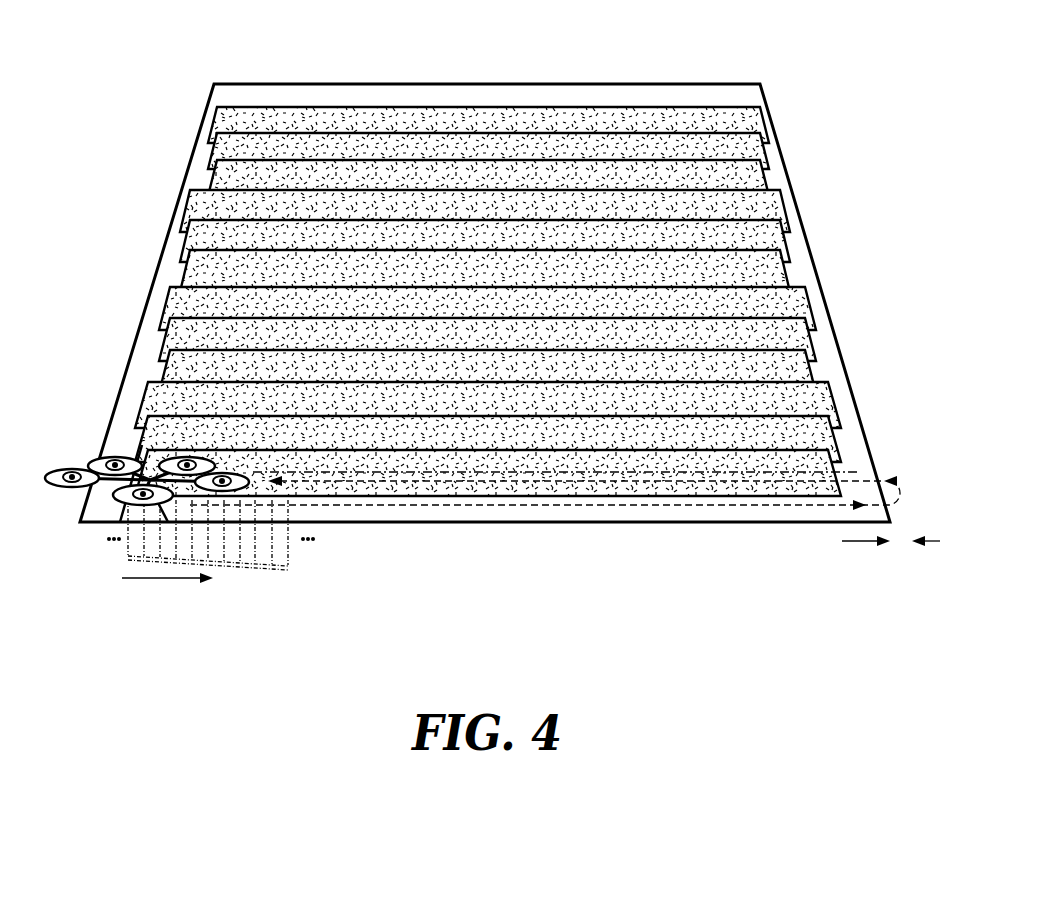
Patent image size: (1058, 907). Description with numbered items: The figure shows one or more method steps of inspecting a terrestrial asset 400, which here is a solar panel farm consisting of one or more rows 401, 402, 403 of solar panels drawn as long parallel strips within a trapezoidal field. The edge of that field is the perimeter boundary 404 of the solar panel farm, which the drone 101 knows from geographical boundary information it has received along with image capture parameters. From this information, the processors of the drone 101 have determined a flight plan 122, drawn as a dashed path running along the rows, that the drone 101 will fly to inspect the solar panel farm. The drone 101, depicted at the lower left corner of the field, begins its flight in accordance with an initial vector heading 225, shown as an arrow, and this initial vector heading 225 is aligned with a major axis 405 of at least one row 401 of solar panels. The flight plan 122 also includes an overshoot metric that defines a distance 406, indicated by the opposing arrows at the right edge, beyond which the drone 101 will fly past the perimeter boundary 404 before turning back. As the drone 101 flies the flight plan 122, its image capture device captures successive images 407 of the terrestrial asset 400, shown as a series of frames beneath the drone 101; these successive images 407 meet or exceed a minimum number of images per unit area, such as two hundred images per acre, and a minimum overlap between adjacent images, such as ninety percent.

The terrestrial asset 400 is at (492, 323).
The perimeter boundary 404 is at (787, 160).
The row of solar panels 403 is at (830, 398).
The row of solar panels 402 is at (831, 437).
The row of solar panels 401 is at (821, 470).
The major axis 405 is at (665, 472).
The flight plan 122 is at (425, 505).
The distance 406 is at (868, 541).
The successive images 407 is at (233, 563).
The initial vector heading 225 is at (153, 583).
The drone 101 is at (72, 457).